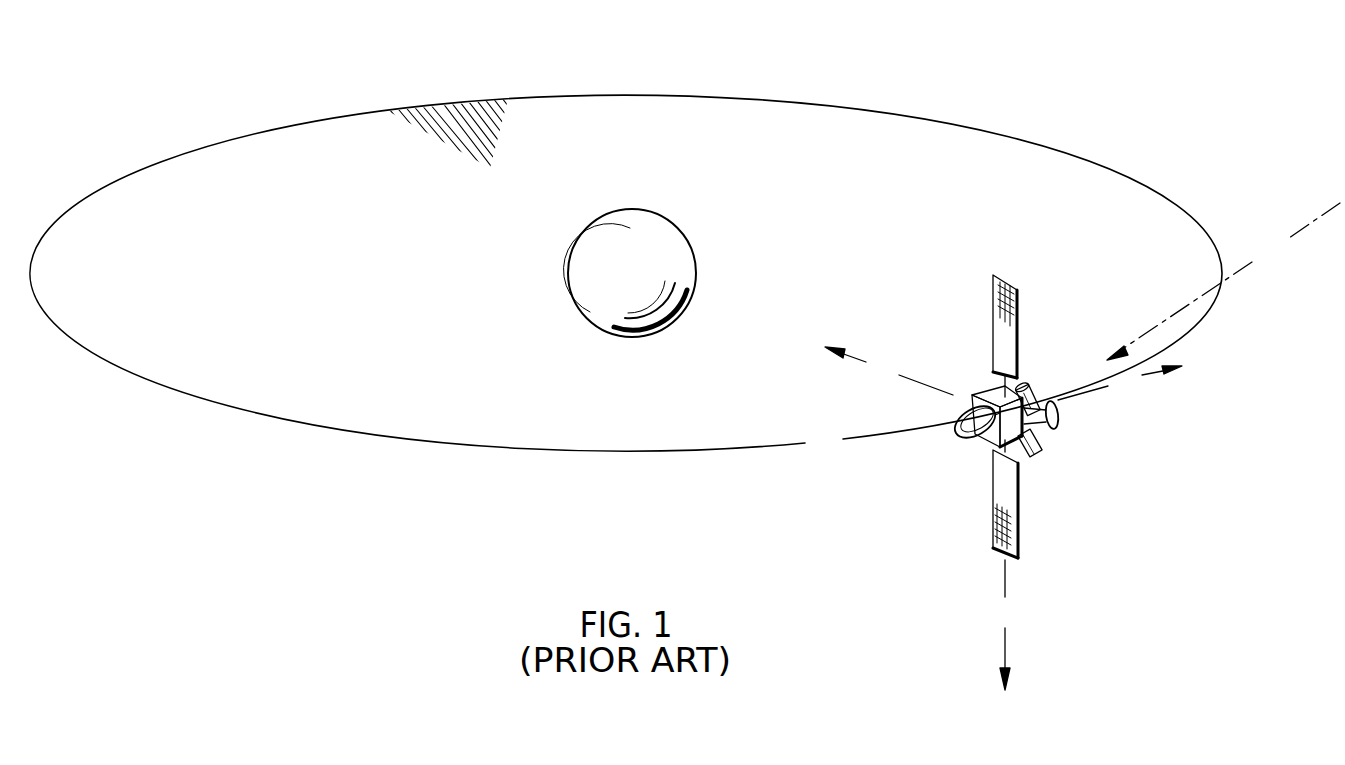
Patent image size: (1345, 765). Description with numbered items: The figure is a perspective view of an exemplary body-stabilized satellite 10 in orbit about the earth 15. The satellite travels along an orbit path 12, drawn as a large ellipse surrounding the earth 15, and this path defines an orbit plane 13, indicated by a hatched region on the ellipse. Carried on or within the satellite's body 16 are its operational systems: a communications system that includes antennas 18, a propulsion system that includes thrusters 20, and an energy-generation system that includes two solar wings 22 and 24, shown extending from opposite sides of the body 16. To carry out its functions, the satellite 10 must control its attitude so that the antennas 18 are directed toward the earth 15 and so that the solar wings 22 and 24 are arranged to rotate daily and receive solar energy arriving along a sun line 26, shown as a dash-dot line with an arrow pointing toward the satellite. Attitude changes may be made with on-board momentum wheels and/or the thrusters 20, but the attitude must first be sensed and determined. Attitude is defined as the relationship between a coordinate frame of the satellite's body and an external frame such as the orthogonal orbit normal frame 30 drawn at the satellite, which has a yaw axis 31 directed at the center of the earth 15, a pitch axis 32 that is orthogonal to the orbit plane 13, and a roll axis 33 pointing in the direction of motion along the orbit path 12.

The body-stabilized satellite 10 is at (936, 457).
The orbit path 12 is at (950, 424).
The orbit plane 13 is at (458, 118).
The earth 15 is at (613, 212).
The satellite body 16 is at (1060, 428).
The antennas 18 is at (962, 414).
The thrusters 20 is at (1040, 393).
The solar wing 22 is at (1003, 300).
The solar wing 24 is at (1000, 538).
The sun line 26 is at (1223, 281).
The orbit normal frame 30 is at (856, 356).
The yaw axis 31 is at (889, 371).
The pitch axis 32 is at (1005, 625).
The roll axis 33 is at (1120, 383).